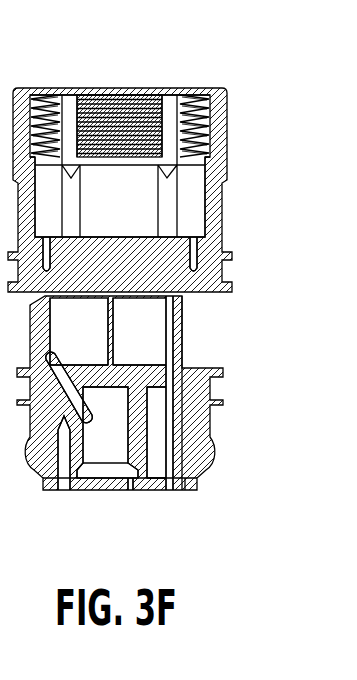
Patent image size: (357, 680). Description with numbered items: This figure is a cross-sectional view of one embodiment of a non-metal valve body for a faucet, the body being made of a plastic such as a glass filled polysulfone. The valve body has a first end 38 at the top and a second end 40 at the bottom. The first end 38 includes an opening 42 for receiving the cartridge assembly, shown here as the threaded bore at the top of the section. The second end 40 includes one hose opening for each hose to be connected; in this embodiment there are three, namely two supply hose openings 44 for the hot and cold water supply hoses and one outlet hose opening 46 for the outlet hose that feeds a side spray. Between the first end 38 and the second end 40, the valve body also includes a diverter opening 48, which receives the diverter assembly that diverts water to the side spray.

The first end 38 is at (241, 73).
The second end 40 is at (154, 425).
The opening 42 is at (100, 95).
The supply hose openings 44 is at (100, 507).
The outlet hose opening 46 is at (158, 507).
The diverter opening 48 is at (165, 314).